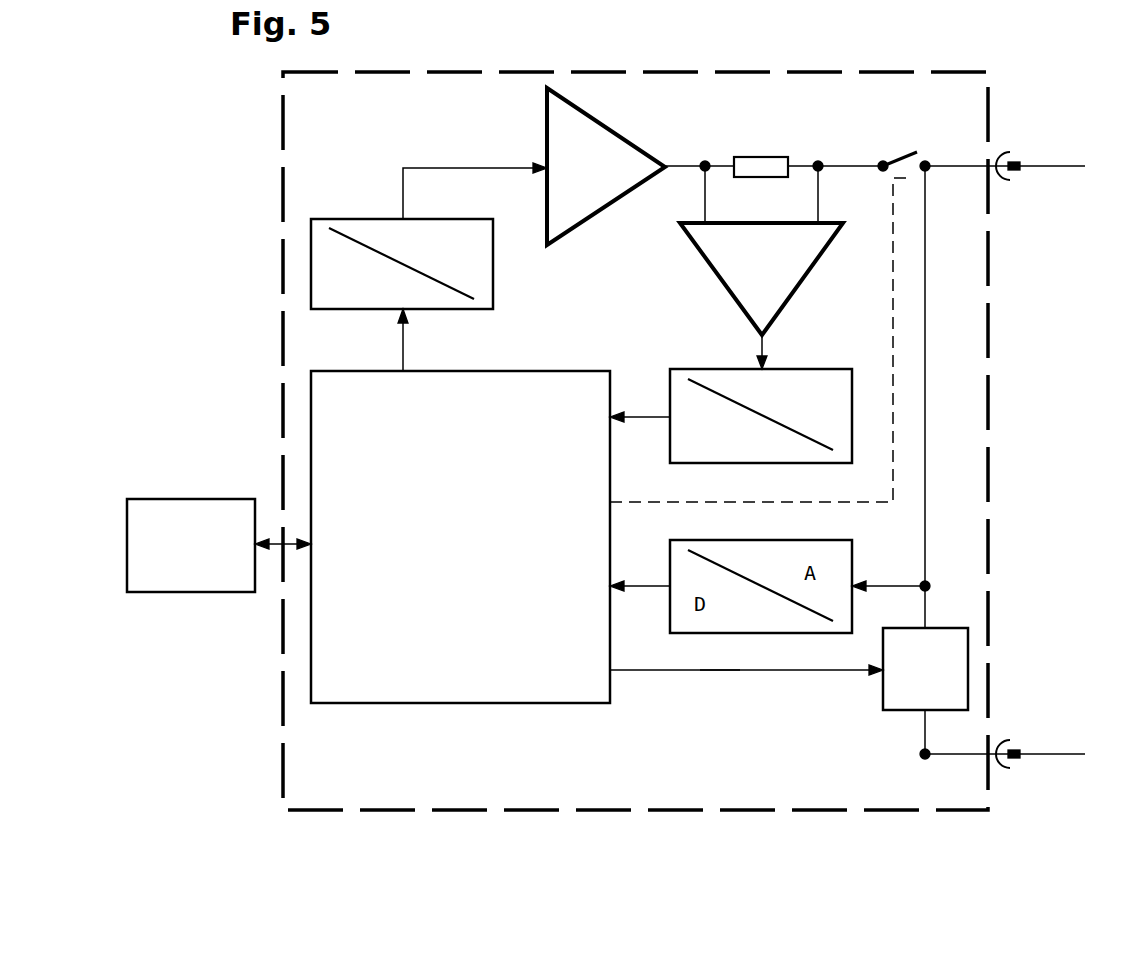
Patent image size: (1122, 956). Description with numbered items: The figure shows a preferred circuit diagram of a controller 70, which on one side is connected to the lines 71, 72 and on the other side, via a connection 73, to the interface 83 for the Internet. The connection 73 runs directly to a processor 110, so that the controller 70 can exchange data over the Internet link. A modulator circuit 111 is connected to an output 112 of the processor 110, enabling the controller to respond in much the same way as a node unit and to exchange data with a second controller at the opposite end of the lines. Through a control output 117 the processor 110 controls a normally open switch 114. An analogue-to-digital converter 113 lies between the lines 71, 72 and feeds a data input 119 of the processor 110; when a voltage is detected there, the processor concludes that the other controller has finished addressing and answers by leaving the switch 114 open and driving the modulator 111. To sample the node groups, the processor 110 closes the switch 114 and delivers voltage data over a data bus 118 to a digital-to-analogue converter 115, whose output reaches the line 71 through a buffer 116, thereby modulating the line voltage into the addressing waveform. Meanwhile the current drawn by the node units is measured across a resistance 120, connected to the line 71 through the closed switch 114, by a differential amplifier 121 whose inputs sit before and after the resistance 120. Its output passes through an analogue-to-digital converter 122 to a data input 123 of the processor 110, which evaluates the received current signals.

The controller 70 is at (988, 418).
The line 71 is at (1028, 150).
The line 72 is at (1027, 733).
The connection 73 is at (277, 532).
The interface for Internet 83 is at (191, 545).
The processor 110 is at (537, 362).
The modulator circuit 111 is at (858, 706).
The output 112 is at (714, 670).
The analogue-to-digital converter 113 is at (740, 643).
The switch 114 is at (888, 142).
The digital-to-analogue converter 115 is at (312, 215).
The buffer 116 is at (546, 118).
The control output 117 is at (728, 348).
The data bus 118 is at (397, 358).
The data input 119 is at (607, 587).
The resistance 120 is at (753, 146).
The differential amplifier 121 is at (708, 275).
The analogue-to-digital converter 122 is at (810, 362).
The data input 123 is at (607, 417).